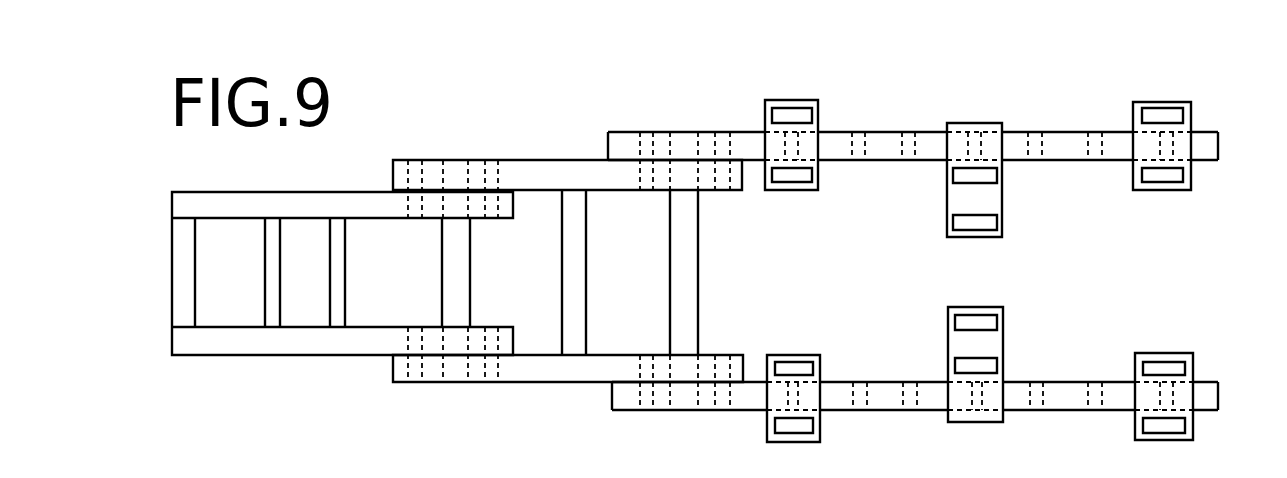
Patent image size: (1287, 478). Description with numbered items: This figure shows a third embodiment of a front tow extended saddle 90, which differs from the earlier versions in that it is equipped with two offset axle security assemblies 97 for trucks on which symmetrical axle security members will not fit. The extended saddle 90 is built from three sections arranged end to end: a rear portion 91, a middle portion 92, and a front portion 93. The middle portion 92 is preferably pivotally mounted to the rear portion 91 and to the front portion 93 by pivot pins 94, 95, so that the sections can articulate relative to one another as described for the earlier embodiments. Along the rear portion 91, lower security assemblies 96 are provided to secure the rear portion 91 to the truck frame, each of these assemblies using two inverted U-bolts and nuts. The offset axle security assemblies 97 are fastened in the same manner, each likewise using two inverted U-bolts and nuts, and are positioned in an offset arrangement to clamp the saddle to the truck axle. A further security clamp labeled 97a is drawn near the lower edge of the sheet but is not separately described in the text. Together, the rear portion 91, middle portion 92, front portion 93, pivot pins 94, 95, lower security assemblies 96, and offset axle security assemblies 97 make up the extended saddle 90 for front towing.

The front tow extended saddle 90 is at (1028, 85).
The rear portion 91 is at (888, 382).
The middle portion 92 is at (618, 353).
The front portion 93 is at (382, 327).
The pivot pin 94 is at (472, 282).
The pivot pin 95 is at (697, 258).
The lower security assembly 96 is at (820, 173).
The offset axle security assembly 97 is at (1003, 228).
The clip 97a is at (671, 470).